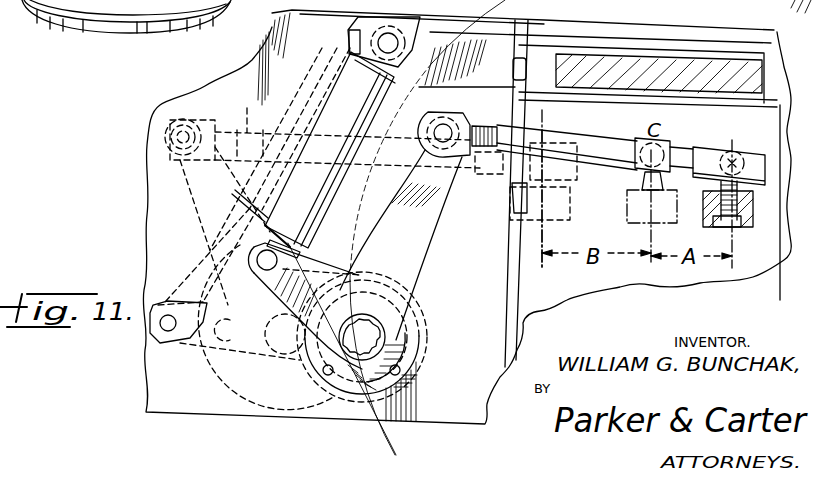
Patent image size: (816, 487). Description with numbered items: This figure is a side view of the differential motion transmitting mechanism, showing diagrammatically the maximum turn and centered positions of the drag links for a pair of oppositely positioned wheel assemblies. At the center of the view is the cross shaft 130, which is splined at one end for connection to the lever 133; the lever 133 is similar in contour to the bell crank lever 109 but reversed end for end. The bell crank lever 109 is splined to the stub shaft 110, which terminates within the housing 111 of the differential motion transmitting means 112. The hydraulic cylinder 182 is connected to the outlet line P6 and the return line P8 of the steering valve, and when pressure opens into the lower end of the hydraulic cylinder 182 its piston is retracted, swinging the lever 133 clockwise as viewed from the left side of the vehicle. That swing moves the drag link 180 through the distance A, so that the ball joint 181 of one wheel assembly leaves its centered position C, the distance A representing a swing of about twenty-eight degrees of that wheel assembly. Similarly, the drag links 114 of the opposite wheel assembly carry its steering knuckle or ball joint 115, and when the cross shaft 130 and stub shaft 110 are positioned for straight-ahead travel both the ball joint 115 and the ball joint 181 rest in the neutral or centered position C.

The bell crank lever 109 is at (183, 185).
The stub shaft 110 is at (253, 380).
The housing 111 is at (698, 0).
The differential motion transmitting means 112 is at (306, 402).
The drag links 114 is at (247, 120).
The steering knuckle or ball joint 115 is at (557, 167).
The cross shaft 130 is at (368, 337).
The lever 133 is at (427, 277).
The drag link 180 is at (616, 133).
The ball joint 181 is at (763, 148).
The hydraulic cylinder 182 is at (320, 117).
The outlet line P6 is at (242, 198).
The return line P8 is at (350, 53).